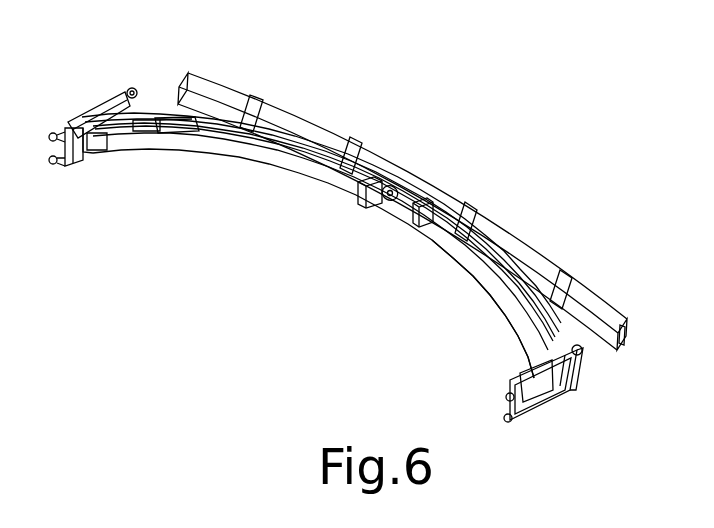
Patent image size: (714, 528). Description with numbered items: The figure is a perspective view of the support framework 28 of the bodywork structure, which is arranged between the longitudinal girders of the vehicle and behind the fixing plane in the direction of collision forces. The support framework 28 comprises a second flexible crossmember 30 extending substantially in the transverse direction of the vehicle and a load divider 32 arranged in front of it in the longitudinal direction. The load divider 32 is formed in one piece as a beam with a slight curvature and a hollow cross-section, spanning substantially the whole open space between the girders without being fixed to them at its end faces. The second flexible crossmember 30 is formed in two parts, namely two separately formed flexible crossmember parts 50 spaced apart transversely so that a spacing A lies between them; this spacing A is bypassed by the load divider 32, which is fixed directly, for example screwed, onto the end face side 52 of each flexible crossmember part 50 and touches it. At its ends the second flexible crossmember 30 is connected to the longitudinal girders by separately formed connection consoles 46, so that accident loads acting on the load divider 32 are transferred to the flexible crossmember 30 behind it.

The support framework 28 is at (323, 121).
The second flexible crossmember 30 is at (500, 307).
The load divider 32 is at (413, 167).
The connection console 46 is at (97, 110).
The flexible crossmember part 50 is at (230, 150).
The end face side 52 is at (362, 148).
The spacing A is at (398, 217).